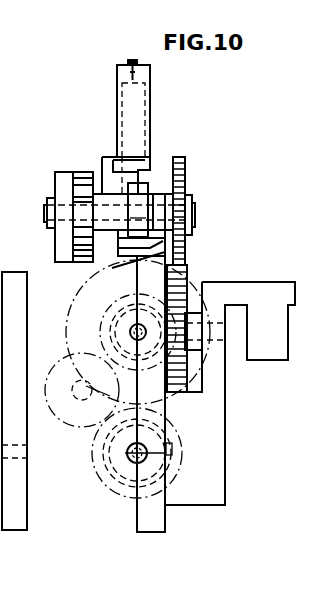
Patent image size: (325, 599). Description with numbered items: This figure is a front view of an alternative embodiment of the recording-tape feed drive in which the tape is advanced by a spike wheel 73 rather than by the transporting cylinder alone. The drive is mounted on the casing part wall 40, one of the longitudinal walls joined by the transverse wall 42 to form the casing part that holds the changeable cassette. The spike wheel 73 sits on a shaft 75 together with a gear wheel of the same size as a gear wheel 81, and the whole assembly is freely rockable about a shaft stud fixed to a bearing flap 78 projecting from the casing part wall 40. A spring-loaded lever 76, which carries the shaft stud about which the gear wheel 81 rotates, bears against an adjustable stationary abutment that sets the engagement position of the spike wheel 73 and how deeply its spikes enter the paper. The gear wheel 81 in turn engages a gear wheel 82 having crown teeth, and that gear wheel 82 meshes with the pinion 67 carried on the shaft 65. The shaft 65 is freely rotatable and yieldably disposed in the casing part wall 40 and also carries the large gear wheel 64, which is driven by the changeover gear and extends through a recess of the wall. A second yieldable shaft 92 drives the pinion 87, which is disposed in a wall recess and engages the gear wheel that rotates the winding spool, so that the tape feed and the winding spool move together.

The spike wheel 73 is at (77, 171).
The lever 76 is at (140, 197).
The gear wheel 81 is at (183, 185).
The shaft 75 is at (193, 213).
The bearing flap 78 is at (135, 255).
The gear wheel 82 is at (183, 283).
The shaft 92 is at (150, 450).
The casing part wall 40 is at (157, 523).
The transverse wall 42 is at (17, 517).
The large gear wheel 64 is at (78, 293).
The pinion 67 is at (110, 320).
The shaft 65 is at (165, 332).
The pinion 87 is at (112, 472).